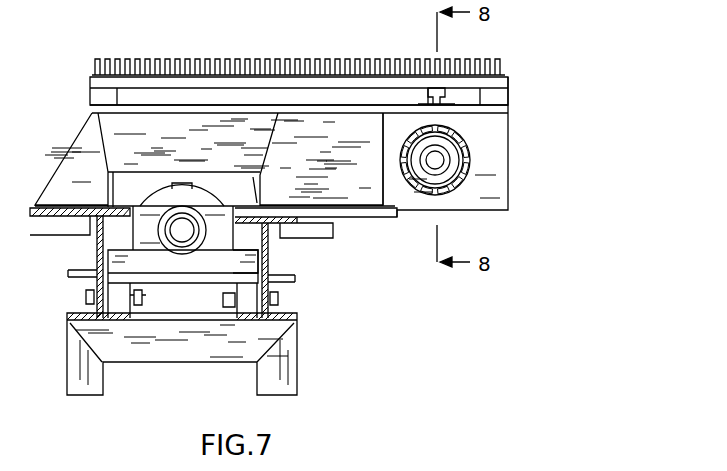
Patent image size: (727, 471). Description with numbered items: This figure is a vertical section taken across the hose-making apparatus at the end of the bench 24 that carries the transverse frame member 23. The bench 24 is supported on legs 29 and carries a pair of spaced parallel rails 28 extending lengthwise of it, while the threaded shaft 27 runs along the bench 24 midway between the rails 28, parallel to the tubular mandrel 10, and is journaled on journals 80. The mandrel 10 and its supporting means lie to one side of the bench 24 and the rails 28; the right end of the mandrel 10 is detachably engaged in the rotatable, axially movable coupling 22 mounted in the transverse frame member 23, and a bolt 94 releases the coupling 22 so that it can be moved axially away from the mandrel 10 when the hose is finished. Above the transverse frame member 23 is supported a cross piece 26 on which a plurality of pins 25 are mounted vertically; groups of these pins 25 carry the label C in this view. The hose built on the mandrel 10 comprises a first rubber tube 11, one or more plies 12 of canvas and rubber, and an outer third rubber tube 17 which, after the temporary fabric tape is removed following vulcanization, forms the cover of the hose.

The pins 25 is at (215, 60).
The comb section C is at (130, 59).
The cross piece 26 is at (510, 79).
The bolt 94 is at (508, 107).
The transverse frame member 23 is at (508, 175).
The third rubber tube 17 is at (466, 180).
The coupling 22 is at (448, 150).
The tubular mandrel 10 is at (462, 160).
The first rubber tube 11 is at (424, 126).
The plies of canvas and rubber 12 is at (404, 156).
The threaded shaft 27 is at (170, 250).
The journals 80 is at (228, 261).
The rails 28 is at (95, 256).
The bench 24 is at (145, 318).
The legs 29 is at (285, 371).